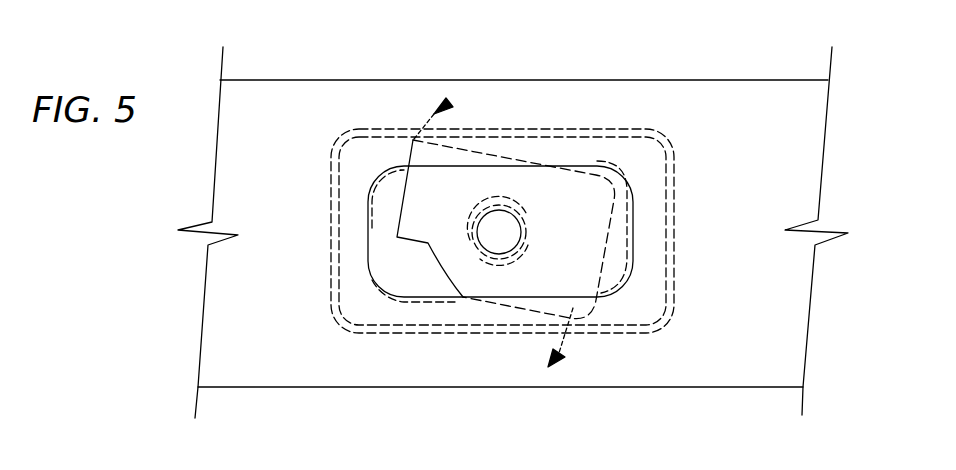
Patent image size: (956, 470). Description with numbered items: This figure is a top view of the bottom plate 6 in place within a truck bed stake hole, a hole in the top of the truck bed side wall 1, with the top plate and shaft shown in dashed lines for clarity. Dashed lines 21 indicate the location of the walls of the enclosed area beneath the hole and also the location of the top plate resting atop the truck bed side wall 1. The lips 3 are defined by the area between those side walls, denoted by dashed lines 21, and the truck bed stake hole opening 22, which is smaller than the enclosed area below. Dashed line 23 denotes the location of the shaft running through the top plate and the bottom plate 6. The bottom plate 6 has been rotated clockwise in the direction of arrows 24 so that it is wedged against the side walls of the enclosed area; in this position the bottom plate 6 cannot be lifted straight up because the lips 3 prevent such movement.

The truck bed side wall 1 is at (290, 130).
The lips 3 is at (352, 157).
The bottom plate 6 is at (418, 187).
The dashed lines 21 is at (672, 165).
The truck bed stake hole opening 22 is at (643, 200).
The dashed line 23 is at (513, 200).
The arrows 24 is at (446, 100).